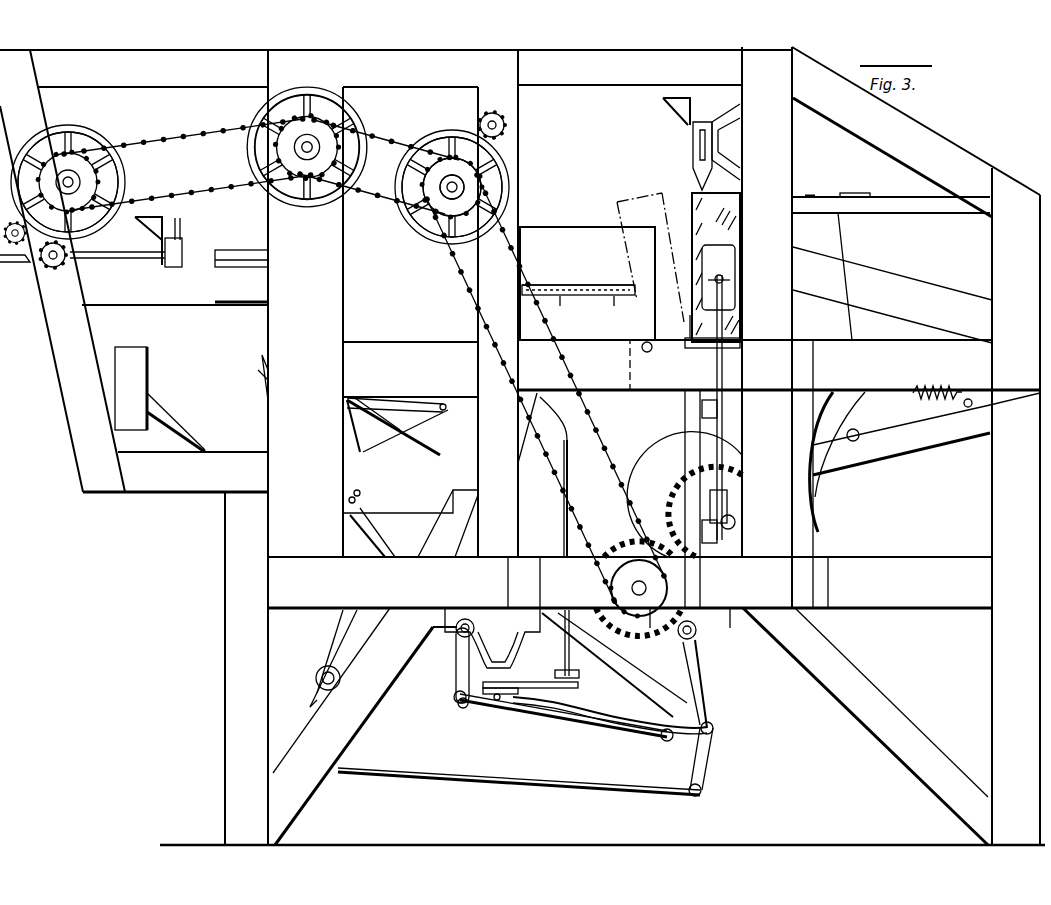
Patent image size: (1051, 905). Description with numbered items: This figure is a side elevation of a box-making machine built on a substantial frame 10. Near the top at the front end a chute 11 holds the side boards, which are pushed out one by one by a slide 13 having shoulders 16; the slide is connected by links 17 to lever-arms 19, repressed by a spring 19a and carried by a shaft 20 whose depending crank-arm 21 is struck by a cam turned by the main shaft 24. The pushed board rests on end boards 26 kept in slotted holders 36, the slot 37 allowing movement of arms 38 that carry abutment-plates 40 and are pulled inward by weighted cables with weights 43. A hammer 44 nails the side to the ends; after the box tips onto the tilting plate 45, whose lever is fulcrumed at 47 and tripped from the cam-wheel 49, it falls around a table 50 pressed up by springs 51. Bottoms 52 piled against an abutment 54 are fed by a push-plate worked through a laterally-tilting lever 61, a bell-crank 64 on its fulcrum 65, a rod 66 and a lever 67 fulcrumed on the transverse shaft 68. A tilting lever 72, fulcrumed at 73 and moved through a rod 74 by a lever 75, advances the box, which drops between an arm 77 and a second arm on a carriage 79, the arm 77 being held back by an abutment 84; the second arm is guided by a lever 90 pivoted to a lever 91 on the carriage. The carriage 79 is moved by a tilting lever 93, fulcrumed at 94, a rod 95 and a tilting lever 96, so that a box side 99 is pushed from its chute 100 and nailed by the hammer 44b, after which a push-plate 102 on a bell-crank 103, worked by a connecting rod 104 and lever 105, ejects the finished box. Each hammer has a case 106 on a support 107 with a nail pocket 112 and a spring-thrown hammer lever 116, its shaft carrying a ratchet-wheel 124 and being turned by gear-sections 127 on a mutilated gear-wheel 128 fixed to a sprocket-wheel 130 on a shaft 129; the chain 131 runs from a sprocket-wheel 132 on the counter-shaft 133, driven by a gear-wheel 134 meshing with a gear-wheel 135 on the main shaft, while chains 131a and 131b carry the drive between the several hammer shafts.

The frame 10 is at (985, 255).
The chute 11 is at (806, 156).
The slide 13 is at (900, 200).
The shoulders 16 is at (815, 184).
The links 17 is at (855, 184).
The lever-arms 19 is at (847, 250).
The spring 19a is at (938, 401).
The shaft 20 is at (858, 441).
The crank-arm 21 is at (838, 505).
The main shaft 24 is at (736, 522).
The end boards 26 is at (740, 228).
The holders 36 is at (740, 340).
The slot 37 is at (723, 345).
The arms 38 is at (723, 425).
The abutment-plates 40 is at (718, 277).
The weights 43 is at (728, 490).
The hammer 44 is at (669, 118).
The hammer 44b is at (181, 226).
The tilting plate 45 is at (688, 320).
The fulcrum 47 is at (647, 352).
The cam-wheel 49 is at (688, 470).
The table 50 is at (578, 305).
The springs 51 is at (586, 311).
The bottoms 52 is at (600, 284).
The abutment 54 is at (587, 283).
The laterally-tilting lever 61 is at (564, 528).
The bell-crank 64 is at (556, 678).
The fulcrum 65 is at (500, 700).
The rod 66 is at (622, 710).
The lever 67 is at (712, 700).
The transverse shaft 68 is at (697, 632).
The tilting lever 72 is at (445, 683).
The fulcrum 73 is at (457, 634).
The rod 74 is at (560, 722).
The lever 75 is at (690, 670).
The arm 77 is at (262, 372).
The carriage 79 is at (375, 448).
The abutment 84 is at (264, 358).
The lever 90 is at (400, 400).
The lever 91 is at (425, 422).
The tilting lever 93 is at (362, 557).
The fulcrum 94 is at (341, 680).
The rod 95 is at (420, 772).
The tilting lever 96 is at (700, 758).
The box sides 99 is at (241, 249).
The chute 100 is at (222, 228).
The push-plate 102 is at (148, 372).
The bell-crank 103 is at (170, 410).
The connecting rod 104 is at (350, 535).
The lever 105 is at (700, 690).
The case 106 is at (453, 194).
The support 107 is at (728, 106).
The pocket 112 is at (140, 222).
The hammer shank or lever 116 is at (130, 260).
The ratchet-wheel 124 is at (507, 125).
The teeth 127 is at (92, 132).
The mutilated gear-wheel 128 is at (95, 138).
The shaft 129 is at (445, 197).
The sprocket-wheel 130 is at (482, 185).
The chain 131 is at (606, 448).
The chain 131a is at (430, 145).
The chain 131b is at (187, 164).
The sprocket-wheel 132 is at (610, 585).
The counter-shaft 133 is at (648, 588).
The gear-wheel 134 is at (612, 540).
The gear-wheel 135 is at (672, 500).